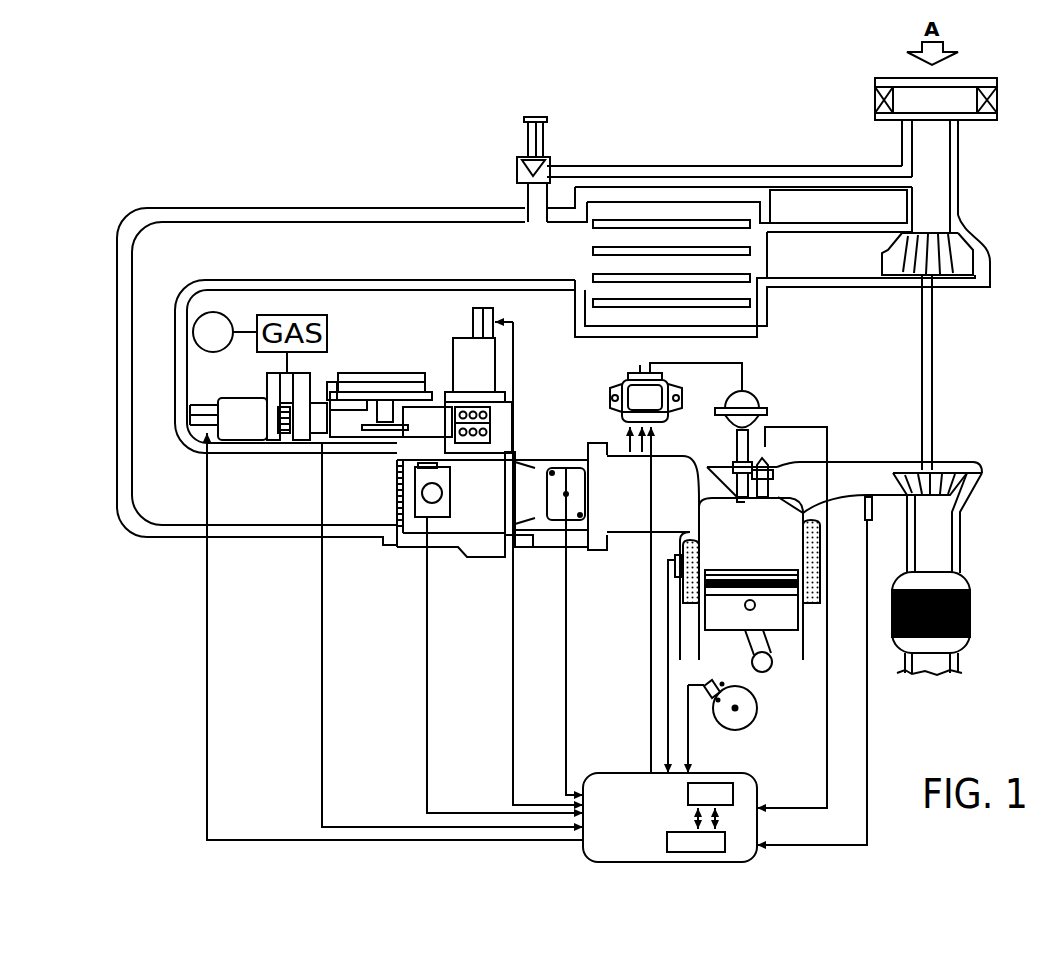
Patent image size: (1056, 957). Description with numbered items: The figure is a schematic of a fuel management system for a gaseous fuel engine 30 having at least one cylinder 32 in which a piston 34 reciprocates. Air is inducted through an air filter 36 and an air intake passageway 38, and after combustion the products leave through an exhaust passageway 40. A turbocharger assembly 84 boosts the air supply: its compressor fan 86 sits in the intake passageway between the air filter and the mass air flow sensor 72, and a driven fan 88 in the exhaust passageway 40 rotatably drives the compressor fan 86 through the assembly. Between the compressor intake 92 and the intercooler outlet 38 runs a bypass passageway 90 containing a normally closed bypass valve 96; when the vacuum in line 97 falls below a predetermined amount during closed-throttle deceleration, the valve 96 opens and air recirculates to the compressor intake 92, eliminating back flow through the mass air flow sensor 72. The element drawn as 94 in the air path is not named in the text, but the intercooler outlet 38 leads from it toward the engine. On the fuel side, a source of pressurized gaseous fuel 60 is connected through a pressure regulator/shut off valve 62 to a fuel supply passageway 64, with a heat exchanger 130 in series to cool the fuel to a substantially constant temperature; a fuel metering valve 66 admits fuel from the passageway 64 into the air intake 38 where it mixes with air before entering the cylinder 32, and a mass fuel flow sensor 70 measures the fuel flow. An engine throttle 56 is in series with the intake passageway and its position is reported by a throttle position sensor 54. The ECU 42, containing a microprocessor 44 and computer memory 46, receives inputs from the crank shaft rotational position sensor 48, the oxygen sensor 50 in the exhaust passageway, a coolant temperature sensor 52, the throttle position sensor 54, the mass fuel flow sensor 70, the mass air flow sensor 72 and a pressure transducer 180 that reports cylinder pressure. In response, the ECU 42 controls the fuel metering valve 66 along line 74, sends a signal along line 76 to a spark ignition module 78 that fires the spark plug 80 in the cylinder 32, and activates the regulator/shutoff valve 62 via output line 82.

The gaseous fuel engine 30 is at (822, 583).
The cylinder 32 is at (697, 555).
The piston 34 is at (780, 618).
The air filter 36 is at (875, 98).
The air intake passageway 38 is at (423, 237).
The exhaust passageway 40 is at (852, 480).
The ECU 42 is at (704, 819).
The microprocessor 44 is at (698, 847).
The computer memory 46 is at (730, 777).
The crank shaft rotational position sensor 48 is at (708, 683).
The oxygen sensor 50 is at (872, 512).
The coolant temperature sensor 52 is at (673, 565).
The throttle position sensor 54 is at (568, 550).
The engine throttle 56 is at (566, 470).
The source of pressurized gaseous fuel 60 is at (210, 312).
The pressure regulator/shut off valve 62 is at (238, 435).
The fuel supply passageway 64 is at (343, 423).
The fuel metering valve 66 is at (493, 358).
The mass fuel flow sensor 70 is at (408, 373).
The mass air flow sensor 72 is at (442, 498).
The output signal line 74 is at (511, 712).
The output signal line 76 is at (650, 727).
The spark ignition module 78 is at (645, 373).
The spark plug 80 is at (733, 457).
The output line 82 is at (207, 783).
The turbocharger assembly 84 is at (935, 385).
The compressor fan 86 is at (952, 253).
The driven fan 88 is at (973, 477).
The bypass passageway 90 is at (865, 175).
The compressor intake 92 is at (940, 198).
The heat exchanger 94 is at (837, 272).
The bypass valve 96 is at (518, 177).
The vacuum line 97 is at (543, 138).
The heat exchanger 130 is at (328, 328).
The pressure transducer 180 is at (767, 468).